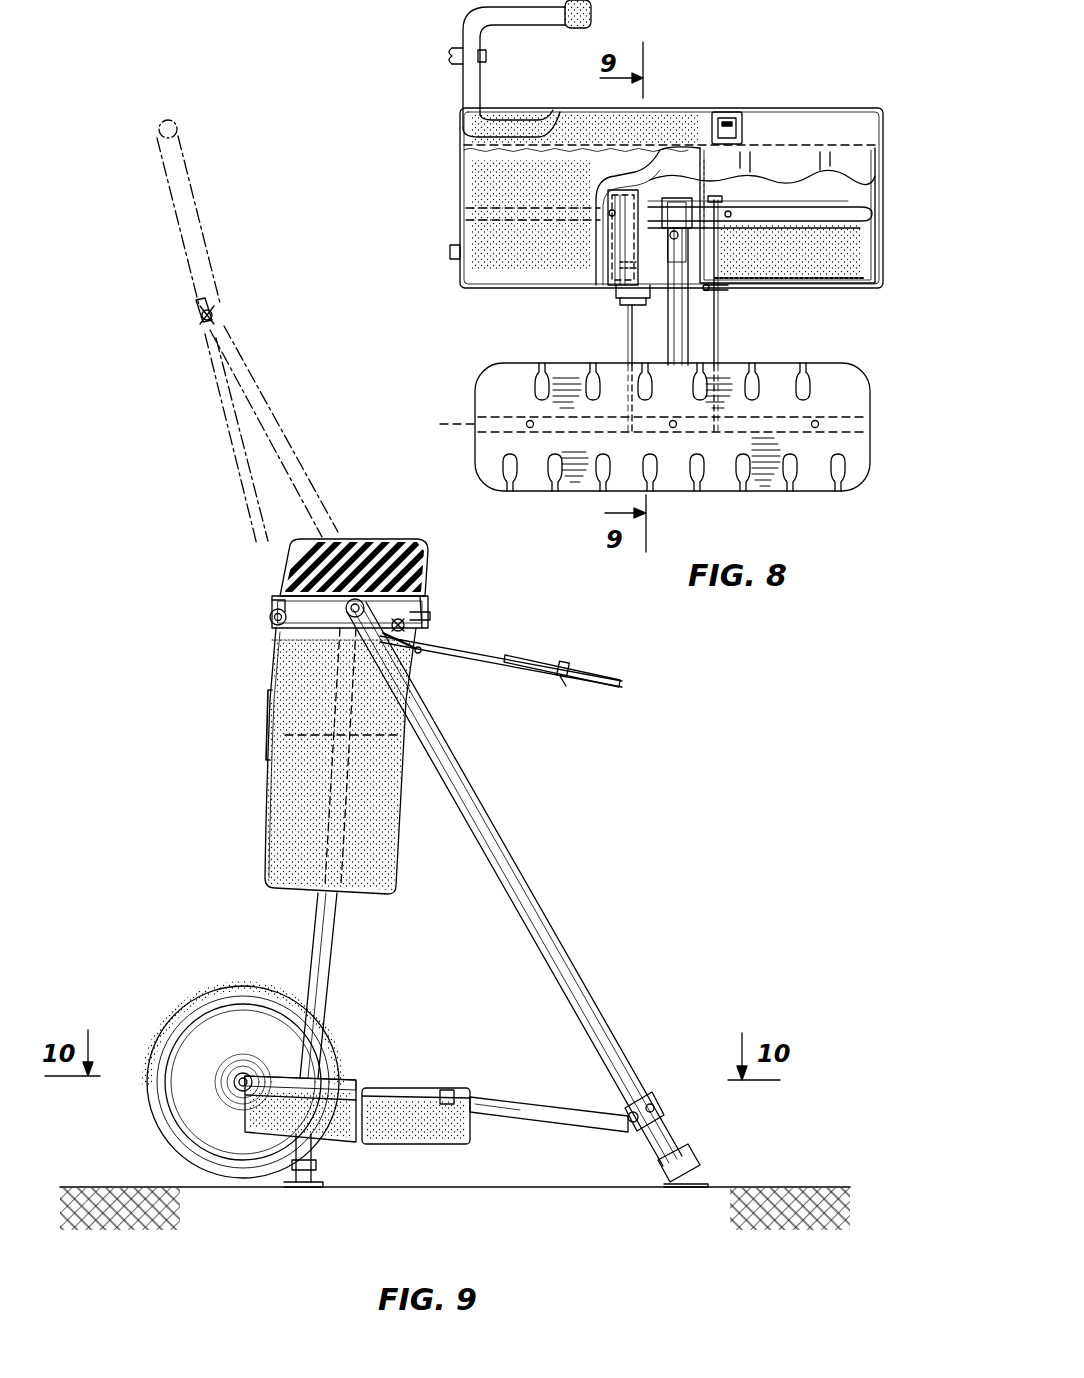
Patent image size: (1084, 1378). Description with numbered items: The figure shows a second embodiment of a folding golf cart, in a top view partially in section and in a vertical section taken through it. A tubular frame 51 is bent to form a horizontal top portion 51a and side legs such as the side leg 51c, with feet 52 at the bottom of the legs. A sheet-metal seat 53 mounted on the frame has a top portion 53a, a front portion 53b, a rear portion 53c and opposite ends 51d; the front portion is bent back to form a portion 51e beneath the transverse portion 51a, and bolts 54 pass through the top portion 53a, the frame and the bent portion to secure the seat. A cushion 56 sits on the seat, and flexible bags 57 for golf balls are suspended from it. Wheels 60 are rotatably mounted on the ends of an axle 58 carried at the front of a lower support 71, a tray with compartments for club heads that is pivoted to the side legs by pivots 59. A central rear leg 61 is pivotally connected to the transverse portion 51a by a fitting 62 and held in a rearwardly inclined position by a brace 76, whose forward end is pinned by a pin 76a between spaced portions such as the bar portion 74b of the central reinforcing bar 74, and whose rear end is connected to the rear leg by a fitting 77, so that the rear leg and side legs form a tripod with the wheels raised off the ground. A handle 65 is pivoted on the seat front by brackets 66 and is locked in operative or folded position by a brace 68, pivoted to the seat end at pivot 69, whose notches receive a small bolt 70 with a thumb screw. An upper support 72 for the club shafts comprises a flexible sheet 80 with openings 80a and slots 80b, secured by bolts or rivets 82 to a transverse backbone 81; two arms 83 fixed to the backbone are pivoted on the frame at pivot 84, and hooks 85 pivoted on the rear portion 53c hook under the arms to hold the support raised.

In FIG. 9, the tubular frame 51 is at (360, 985).
In FIG. 8, the horizontal top portion 51a is at (783, 212).
In FIG. 9, the side leg 51c is at (324, 958).
In FIG. 9, the opposite ends 51d is at (270, 700).
In FIG. 8, the bent-back portion 51e is at (815, 240).
In FIG. 9, the bent-back portion 51e is at (336, 628).
In FIG. 9, the feet 52 is at (312, 1178).
In FIG. 8, the seat 53 is at (618, 286).
In FIG. 9, the seat 53 is at (318, 590).
In FIG. 9, the top portion 53a is at (424, 596).
In FIG. 9, the front portion 53b is at (272, 604).
In FIG. 9, the rear portion 53c is at (418, 628).
In FIG. 8, the bolts 54 is at (612, 214).
In FIG. 9, the cushion 56 is at (368, 560).
In FIG. 8, the bags 57 is at (820, 120).
In FIG. 9, the bags 57 is at (272, 818).
In FIG. 9, the axle 58 is at (236, 1090).
In FIG. 9, the pivots 59 is at (322, 1136).
In FIG. 9, the wheels 60 is at (190, 1008).
In FIG. 8, the central rear leg 61 is at (668, 328).
In FIG. 9, the central rear leg 61 is at (545, 918).
In FIG. 8, the fitting 62 is at (676, 214).
In FIG. 9, the fitting 62 is at (346, 607).
In FIG. 8, the handle 65 is at (475, 6).
In FIG. 9, the handle 65 is at (190, 185).
In FIG. 8, the brackets 66 is at (748, 130).
In FIG. 9, the brackets 66 is at (270, 620).
In FIG. 8, the brace 68 is at (462, 128).
In FIG. 9, the brace 68 is at (285, 430).
In FIG. 9, the brace pivot 69 is at (408, 627).
In FIG. 8, the small bolt 70 is at (487, 57).
In FIG. 9, the small bolt 70 is at (218, 318).
In FIG. 9, the lower support 71 is at (480, 1140).
In FIG. 8, the upper support 72 is at (643, 403).
In FIG. 9, the upper support 72 is at (591, 672).
In FIG. 9, the central reinforcing bar 74 is at (288, 1076).
In FIG. 9, the bifurcated bar portion 74b is at (386, 1088).
In FIG. 9, the brace 76 is at (538, 1104).
In FIG. 9, the pin 76a is at (444, 1090).
In FIG. 9, the fitting 77 is at (642, 1132).
In FIG. 8, the flexible sheet 80 is at (478, 458).
In FIG. 9, the flexible sheet 80 is at (622, 684).
In FIG. 8, the openings 80a is at (537, 378).
In FIG. 9, the openings 80a is at (535, 662).
In FIG. 8, the slots 80b is at (542, 372).
In FIG. 9, the slots 80b is at (515, 656).
In FIG. 8, the backbone 81 is at (643, 417).
In FIG. 9, the backbone 81 is at (568, 682).
In FIG. 8, the bolts or rivets 82 is at (528, 418).
In FIG. 9, the bolts or rivets 82 is at (568, 666).
In FIG. 8, the arms 83 is at (720, 340).
In FIG. 9, the arms 83 is at (518, 672).
In FIG. 8, the pivot 84 is at (604, 175).
In FIG. 8, the hooks 85 is at (722, 288).
In FIG. 9, the hooks 85 is at (418, 652).